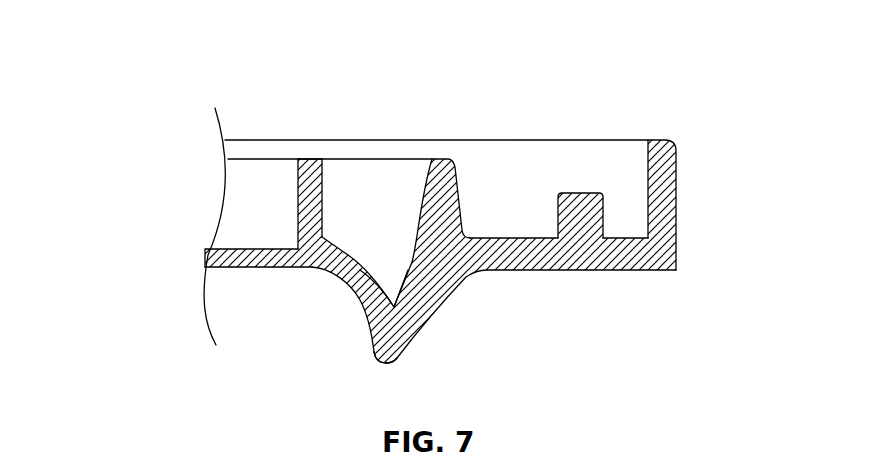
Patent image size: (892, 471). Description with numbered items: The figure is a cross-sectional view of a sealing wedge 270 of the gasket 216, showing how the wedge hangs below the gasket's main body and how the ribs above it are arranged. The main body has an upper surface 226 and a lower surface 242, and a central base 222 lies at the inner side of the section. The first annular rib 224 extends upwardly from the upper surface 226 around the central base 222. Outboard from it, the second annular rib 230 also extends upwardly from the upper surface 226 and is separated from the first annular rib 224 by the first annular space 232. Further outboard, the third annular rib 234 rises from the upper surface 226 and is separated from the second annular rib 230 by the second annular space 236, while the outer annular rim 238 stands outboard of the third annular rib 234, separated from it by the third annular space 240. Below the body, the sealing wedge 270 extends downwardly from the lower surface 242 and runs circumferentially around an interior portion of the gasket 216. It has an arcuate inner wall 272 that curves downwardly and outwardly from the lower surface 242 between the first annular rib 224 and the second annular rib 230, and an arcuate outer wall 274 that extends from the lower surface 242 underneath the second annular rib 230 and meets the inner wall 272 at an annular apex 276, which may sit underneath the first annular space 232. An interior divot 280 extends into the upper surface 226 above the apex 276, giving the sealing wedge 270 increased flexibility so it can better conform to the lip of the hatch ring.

The gasket 216 is at (213, 64).
The central base 222 is at (209, 247).
The first annular rib 224 is at (311, 162).
The upper surface 226 is at (245, 248).
The second annular rib 230 is at (438, 160).
The first annular space 232 is at (362, 192).
The third annular rib 234 is at (581, 207).
The second annular space 236 is at (495, 190).
The outer annular rim 238 is at (677, 183).
The third annular space 240 is at (615, 195).
The lower surface 242 is at (242, 268).
The sealing wedge 270 is at (290, 249).
The arcuate inner wall 272 is at (343, 283).
The arcuate outer wall 274 is at (427, 318).
The annular apex 276 is at (390, 363).
The interior divot 280 is at (396, 306).